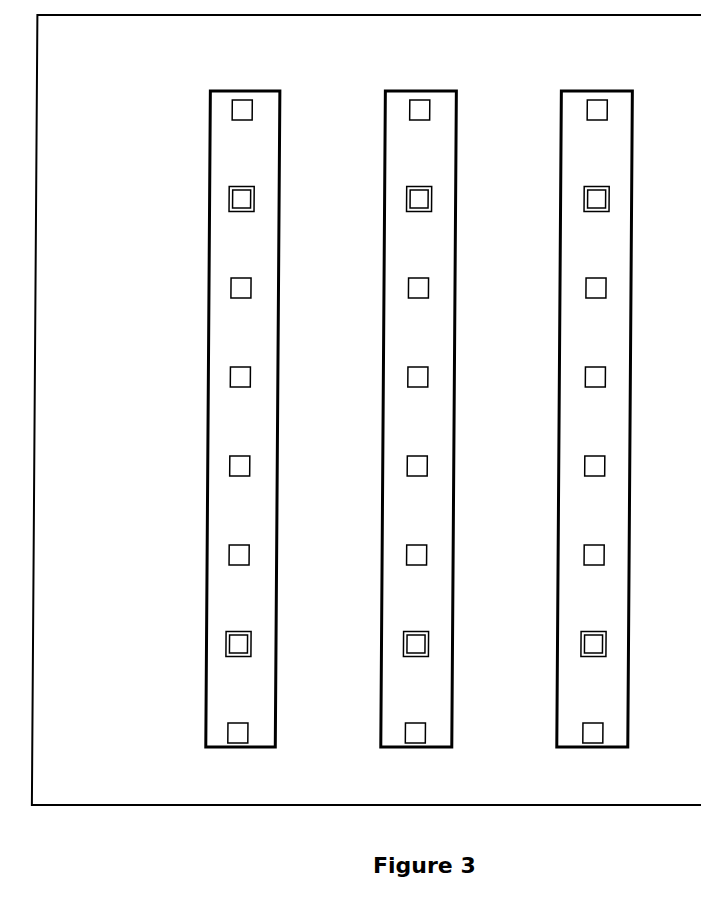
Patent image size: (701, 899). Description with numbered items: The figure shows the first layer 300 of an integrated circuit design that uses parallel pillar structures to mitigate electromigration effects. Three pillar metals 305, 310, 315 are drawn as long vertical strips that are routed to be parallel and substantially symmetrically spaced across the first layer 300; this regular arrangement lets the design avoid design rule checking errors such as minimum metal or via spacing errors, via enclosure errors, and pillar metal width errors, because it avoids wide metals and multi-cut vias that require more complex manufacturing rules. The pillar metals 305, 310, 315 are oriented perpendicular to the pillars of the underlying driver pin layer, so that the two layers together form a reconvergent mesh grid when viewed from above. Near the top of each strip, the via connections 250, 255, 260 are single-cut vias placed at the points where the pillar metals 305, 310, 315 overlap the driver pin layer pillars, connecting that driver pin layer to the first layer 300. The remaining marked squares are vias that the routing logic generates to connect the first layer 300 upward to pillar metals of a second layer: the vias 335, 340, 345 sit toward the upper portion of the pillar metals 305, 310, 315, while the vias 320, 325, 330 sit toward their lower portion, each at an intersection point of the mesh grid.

The first layer 300 is at (366, 410).
The pillar metal 305 is at (279, 421).
The pillar metal 310 is at (455, 421).
The pillar metal 315 is at (631, 421).
The via connection 250 is at (232, 110).
The via connection 255 is at (410, 110).
The via connection 260 is at (588, 110).
The via 335 is at (229, 199).
The via 340 is at (407, 199).
The via 345 is at (585, 199).
The via 320 is at (226, 644).
The via 325 is at (403, 644).
The via 330 is at (581, 644).